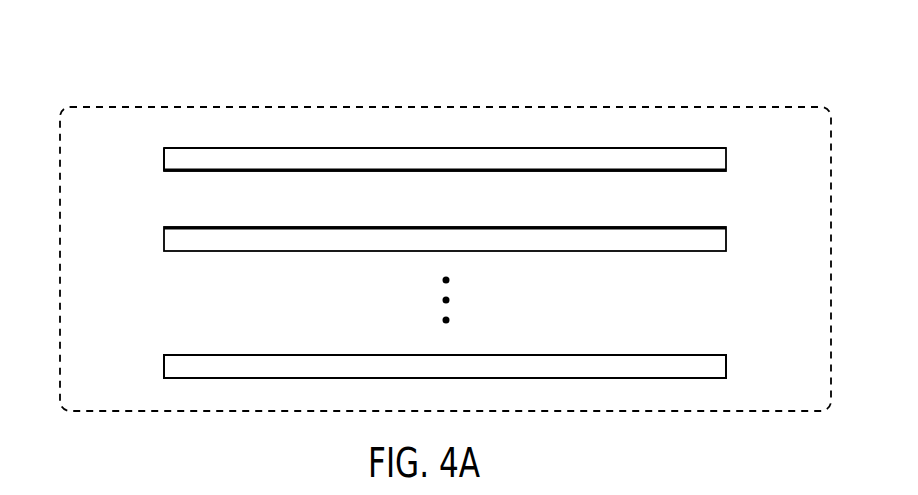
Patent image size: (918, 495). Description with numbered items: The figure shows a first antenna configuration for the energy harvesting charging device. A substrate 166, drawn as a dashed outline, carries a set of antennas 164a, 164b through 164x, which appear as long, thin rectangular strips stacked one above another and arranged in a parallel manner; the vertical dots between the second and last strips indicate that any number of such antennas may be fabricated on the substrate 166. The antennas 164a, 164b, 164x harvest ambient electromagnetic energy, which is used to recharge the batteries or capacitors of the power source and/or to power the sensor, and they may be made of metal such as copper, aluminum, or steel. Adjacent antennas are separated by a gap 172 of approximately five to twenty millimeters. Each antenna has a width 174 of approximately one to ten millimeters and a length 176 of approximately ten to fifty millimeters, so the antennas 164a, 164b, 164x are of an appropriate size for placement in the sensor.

The substrate 166 is at (517, 106).
The antenna 164a is at (726, 148).
The antenna 164b is at (726, 227).
The antenna 164x is at (726, 355).
The width 174 is at (164, 160).
The length 176 is at (480, 147).
The gap 172 is at (176, 202).